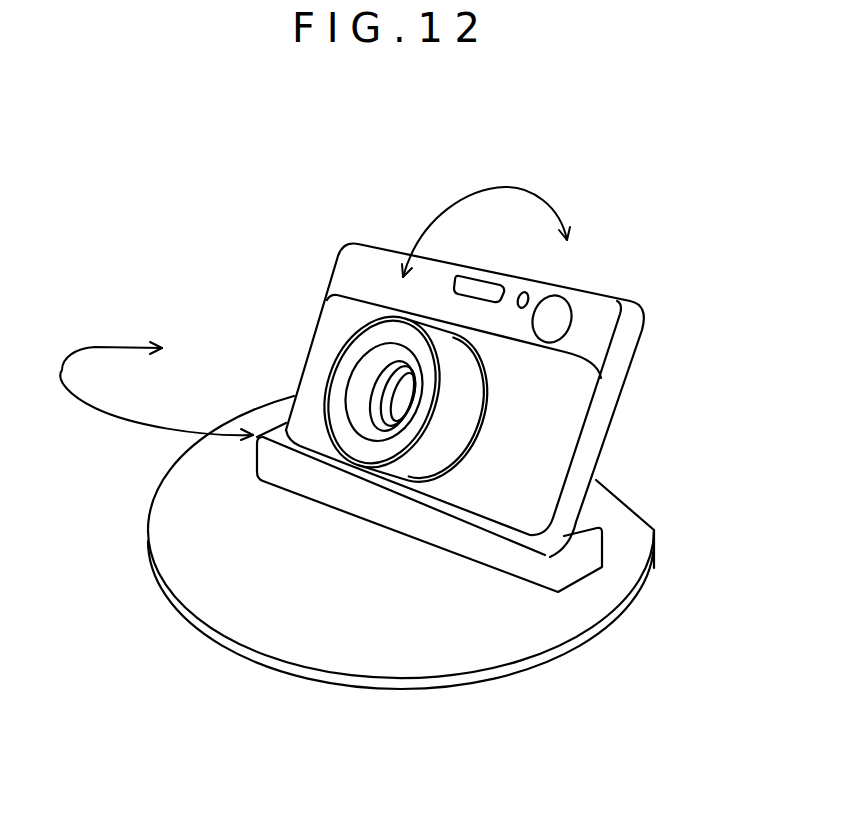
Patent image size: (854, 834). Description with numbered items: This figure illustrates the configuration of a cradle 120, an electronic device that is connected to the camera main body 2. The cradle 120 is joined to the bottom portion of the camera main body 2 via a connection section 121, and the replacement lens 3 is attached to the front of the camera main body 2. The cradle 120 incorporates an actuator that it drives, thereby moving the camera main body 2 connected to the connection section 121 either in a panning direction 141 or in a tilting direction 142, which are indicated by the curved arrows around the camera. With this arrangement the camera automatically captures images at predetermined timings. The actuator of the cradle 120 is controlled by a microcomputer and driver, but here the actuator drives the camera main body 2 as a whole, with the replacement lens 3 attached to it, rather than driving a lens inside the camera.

The camera main body 2 is at (645, 342).
The replacement lens 3 is at (363, 447).
The cradle 120 is at (515, 675).
The connection section 121 is at (577, 567).
The panning direction 141 is at (86, 402).
The tilting direction 142 is at (512, 188).